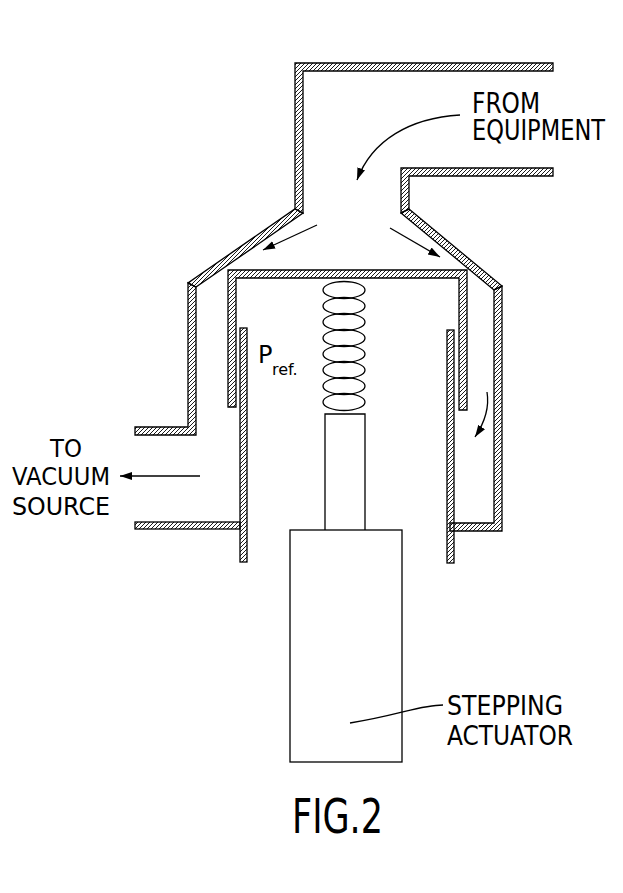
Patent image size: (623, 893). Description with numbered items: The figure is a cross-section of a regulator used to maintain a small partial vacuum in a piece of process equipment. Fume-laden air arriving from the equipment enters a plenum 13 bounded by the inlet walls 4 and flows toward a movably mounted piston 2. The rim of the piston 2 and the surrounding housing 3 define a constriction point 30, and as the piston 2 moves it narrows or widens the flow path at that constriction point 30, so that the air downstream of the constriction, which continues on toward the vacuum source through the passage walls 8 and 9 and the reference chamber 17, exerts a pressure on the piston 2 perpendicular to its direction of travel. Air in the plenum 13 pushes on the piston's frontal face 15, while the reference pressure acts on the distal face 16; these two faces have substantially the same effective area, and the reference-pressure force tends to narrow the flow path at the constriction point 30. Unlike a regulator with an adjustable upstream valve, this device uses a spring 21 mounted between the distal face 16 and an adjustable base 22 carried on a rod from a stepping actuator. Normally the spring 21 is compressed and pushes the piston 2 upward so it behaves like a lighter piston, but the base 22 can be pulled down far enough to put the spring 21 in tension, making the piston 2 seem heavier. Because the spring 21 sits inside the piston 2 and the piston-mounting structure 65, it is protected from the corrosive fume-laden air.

The piston 2 is at (257, 272).
The housing 3 is at (503, 312).
The inlet conduit wall 4 is at (296, 131).
The vacuum passage wall 8 is at (185, 530).
The right inner partition wall 9 is at (455, 552).
The plenum 13 is at (368, 236).
The frontal face 15 is at (440, 268).
The distal face 16 is at (413, 279).
The reference pressure chamber 17 is at (297, 445).
The spring 21 is at (360, 407).
The base 22 is at (367, 466).
The constriction point 30 is at (237, 257).
The piston-mounting structure 65 is at (249, 512).